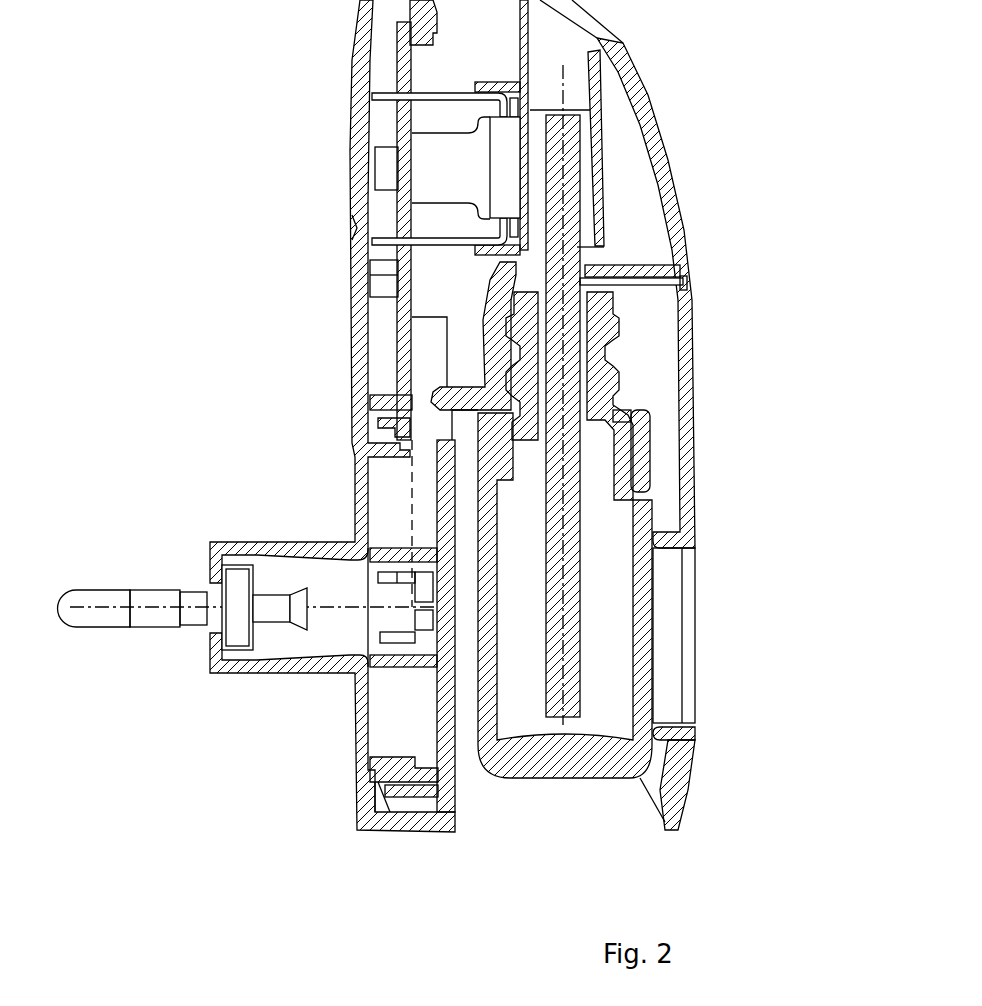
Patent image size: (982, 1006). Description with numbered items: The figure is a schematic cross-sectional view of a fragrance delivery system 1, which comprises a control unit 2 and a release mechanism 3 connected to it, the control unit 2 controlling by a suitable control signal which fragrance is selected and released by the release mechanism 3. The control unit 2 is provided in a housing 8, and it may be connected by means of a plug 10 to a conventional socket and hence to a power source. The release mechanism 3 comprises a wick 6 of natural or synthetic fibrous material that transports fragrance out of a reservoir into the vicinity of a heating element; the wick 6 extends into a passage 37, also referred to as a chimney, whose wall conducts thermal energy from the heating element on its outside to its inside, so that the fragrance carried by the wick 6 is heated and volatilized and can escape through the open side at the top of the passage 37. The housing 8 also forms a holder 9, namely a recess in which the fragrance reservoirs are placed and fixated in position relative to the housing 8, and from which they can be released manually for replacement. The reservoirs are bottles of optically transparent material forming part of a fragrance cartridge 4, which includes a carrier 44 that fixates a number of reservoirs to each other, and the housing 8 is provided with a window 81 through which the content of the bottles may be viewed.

The fragrance delivery system 1 is at (310, 837).
The control unit 2 is at (403, 200).
The release mechanism 3 is at (503, 137).
The fragrance cartridge 4 is at (530, 755).
The wick 6 is at (687, 282).
The housing 8 is at (362, 34).
The holder 9 is at (642, 365).
The plug 10 is at (143, 600).
The passage 37 is at (597, 145).
The carrier 44 is at (643, 443).
The window 81 is at (697, 633).